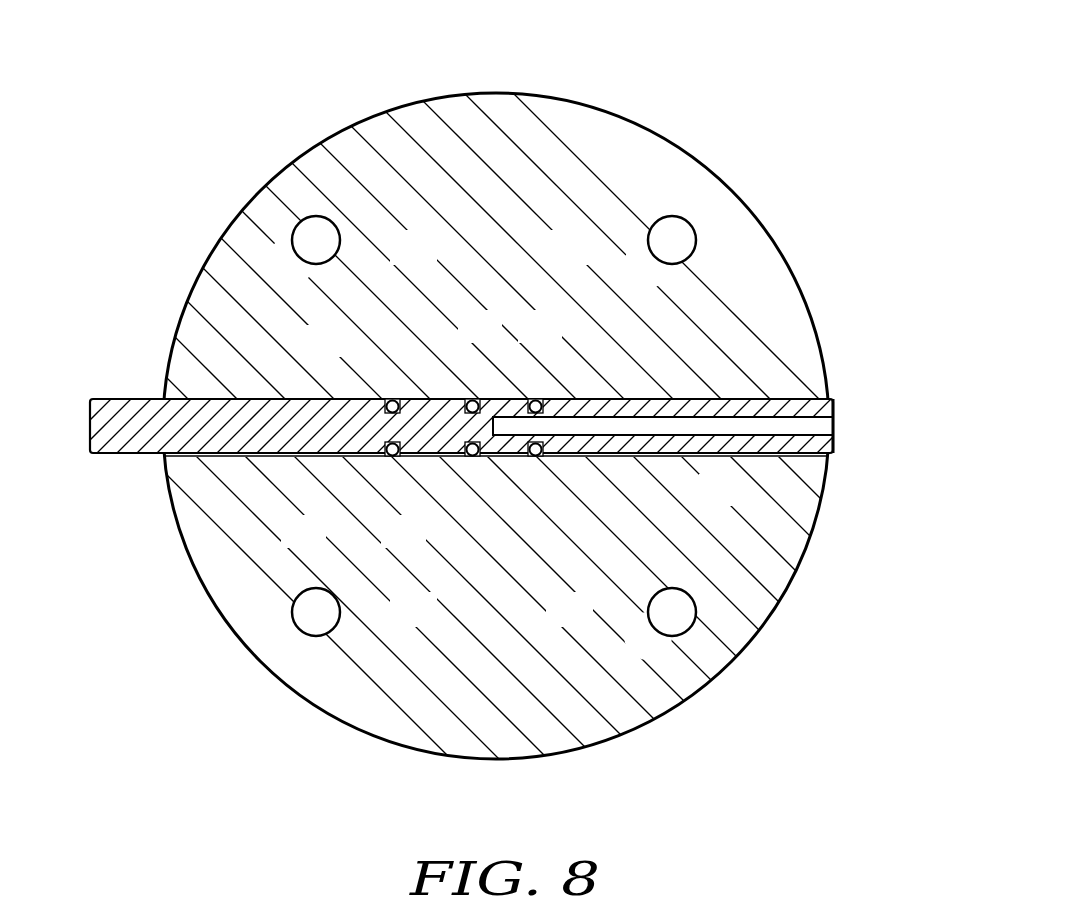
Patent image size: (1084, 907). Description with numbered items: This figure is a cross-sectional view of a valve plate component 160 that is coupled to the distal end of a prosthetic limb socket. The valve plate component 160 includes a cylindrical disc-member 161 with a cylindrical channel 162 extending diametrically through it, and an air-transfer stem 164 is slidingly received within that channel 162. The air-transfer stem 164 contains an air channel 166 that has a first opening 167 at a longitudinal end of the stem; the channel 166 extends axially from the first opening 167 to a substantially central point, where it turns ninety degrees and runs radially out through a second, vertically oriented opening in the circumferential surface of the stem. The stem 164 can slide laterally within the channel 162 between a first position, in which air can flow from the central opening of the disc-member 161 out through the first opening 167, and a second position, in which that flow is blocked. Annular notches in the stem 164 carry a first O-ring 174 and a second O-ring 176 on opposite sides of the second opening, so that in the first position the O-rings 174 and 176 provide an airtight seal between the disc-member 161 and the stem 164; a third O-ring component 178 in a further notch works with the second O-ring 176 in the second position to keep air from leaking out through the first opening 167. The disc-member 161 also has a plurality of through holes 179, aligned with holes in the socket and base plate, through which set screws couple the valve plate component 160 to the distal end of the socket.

The valve plate component 160 is at (546, 94).
The cylindrical disc-member 161 is at (755, 600).
The cylindrical channel 162 is at (292, 455).
The air-transfer stem 164 is at (322, 417).
The air channel 166 is at (712, 417).
The first opening 167 is at (835, 428).
The first O-ring 174 is at (536, 399).
The second O-ring 176 is at (473, 399).
The third O-ring component 178 is at (393, 456).
The through holes 179 is at (332, 240).